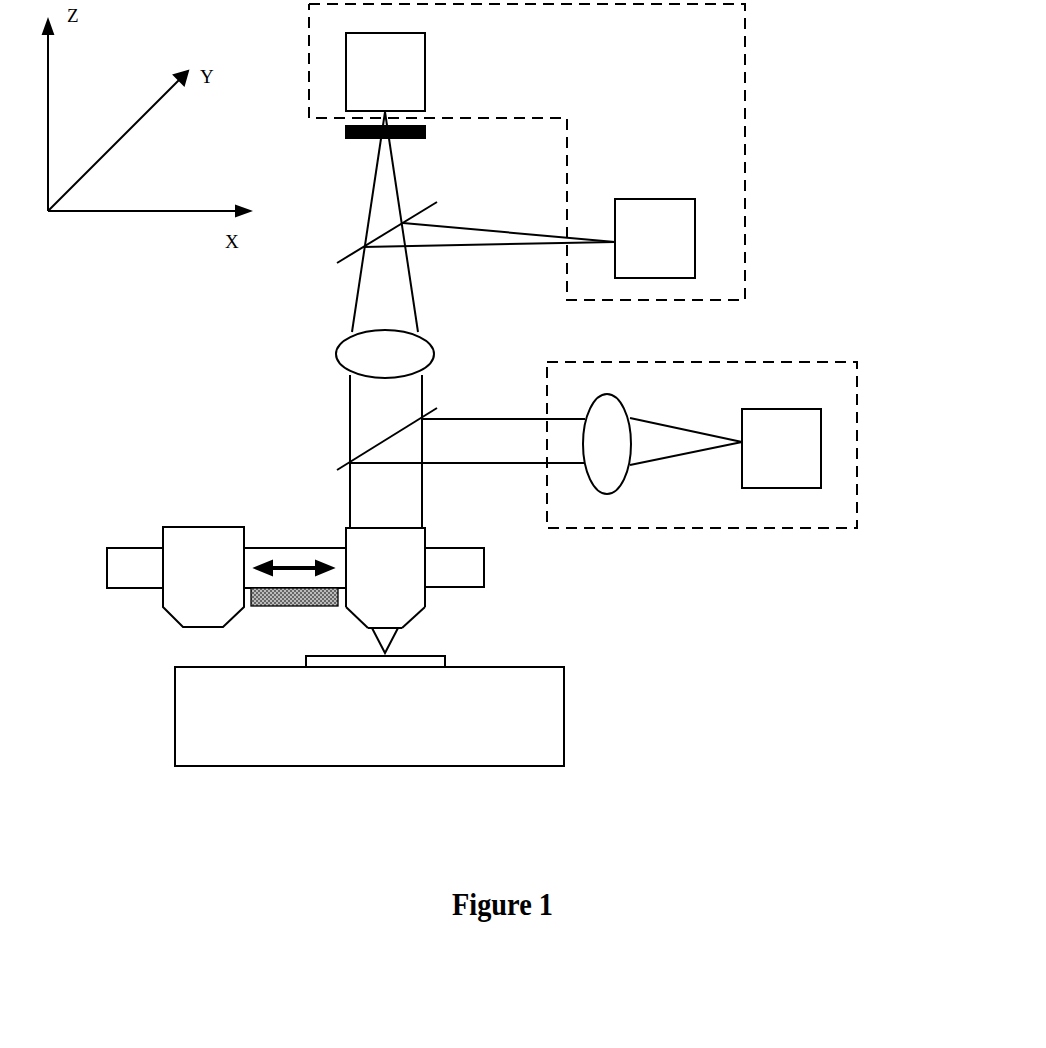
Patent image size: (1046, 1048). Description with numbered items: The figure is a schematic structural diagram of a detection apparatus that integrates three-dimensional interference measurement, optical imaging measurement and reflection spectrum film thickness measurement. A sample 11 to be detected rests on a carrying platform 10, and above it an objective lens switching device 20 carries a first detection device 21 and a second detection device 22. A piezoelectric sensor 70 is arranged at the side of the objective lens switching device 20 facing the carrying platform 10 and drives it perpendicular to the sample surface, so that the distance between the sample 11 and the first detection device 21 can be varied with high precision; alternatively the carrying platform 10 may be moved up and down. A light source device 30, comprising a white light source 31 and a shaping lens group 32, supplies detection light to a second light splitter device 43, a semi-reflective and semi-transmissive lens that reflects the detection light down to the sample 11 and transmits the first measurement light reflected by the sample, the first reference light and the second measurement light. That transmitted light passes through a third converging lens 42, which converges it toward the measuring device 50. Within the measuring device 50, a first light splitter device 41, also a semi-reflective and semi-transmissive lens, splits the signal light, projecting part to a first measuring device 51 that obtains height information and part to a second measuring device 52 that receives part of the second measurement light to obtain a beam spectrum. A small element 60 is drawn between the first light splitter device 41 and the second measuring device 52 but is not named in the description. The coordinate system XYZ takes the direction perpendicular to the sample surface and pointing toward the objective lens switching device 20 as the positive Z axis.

The carrying platform 10 is at (564, 718).
The sample to be detected 11 is at (445, 657).
The objective lens switching device 20 is at (484, 571).
The first detection device 21 is at (405, 610).
The second detection device 22 is at (207, 557).
The light source device 30 is at (857, 367).
The white light source 31 is at (781, 434).
The shaping lens group 32 is at (607, 431).
The first light splitter device 41 is at (387, 232).
The third converging lens 42 is at (395, 347).
The second light splitter device 43 is at (387, 439).
The measuring device 50 is at (745, 80).
The first measuring device 51 is at (695, 212).
The second measuring device 52 is at (425, 60).
The pinhole / filter 60 is at (425, 130).
The piezoelectric sensor 70 is at (280, 600).